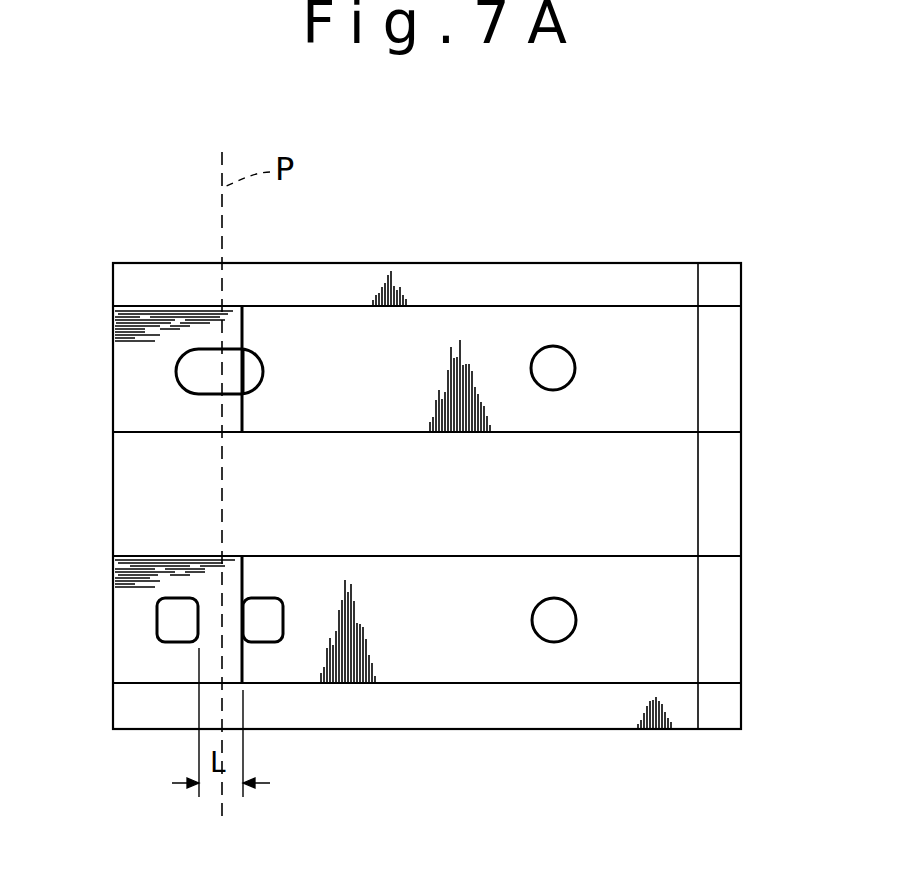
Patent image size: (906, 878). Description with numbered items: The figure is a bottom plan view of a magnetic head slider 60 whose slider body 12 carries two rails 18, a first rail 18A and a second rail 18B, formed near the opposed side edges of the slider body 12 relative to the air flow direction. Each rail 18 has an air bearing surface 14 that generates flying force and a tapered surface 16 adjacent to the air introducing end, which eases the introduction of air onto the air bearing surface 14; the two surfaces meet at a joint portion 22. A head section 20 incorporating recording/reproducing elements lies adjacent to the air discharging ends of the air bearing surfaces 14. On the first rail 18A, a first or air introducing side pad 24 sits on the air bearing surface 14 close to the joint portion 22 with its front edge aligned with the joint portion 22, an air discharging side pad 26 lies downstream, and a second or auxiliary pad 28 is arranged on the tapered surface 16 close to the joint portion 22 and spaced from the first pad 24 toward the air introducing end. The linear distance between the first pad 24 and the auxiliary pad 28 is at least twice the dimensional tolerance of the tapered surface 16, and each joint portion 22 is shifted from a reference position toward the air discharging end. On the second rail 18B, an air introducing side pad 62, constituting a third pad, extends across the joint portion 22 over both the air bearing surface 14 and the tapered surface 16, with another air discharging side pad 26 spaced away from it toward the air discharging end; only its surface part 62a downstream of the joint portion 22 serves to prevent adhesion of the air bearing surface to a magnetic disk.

The magnetic head slider 60 is at (428, 228).
The slider body 12 is at (466, 306).
The air bearing surface 14 is at (320, 306).
The tapered surface 16 is at (130, 375).
The rail 18 is at (675, 556).
The first rail 18A is at (385, 683).
The second rail 18B is at (532, 306).
The head section 20 is at (728, 368).
The joint portion 22 is at (242, 565).
The first pad 24 is at (265, 630).
The air discharging side pad 26 is at (560, 362).
The second pad 28 is at (170, 615).
The air introducing side pad 62 is at (204, 349).
The surface part 62a is at (250, 368).